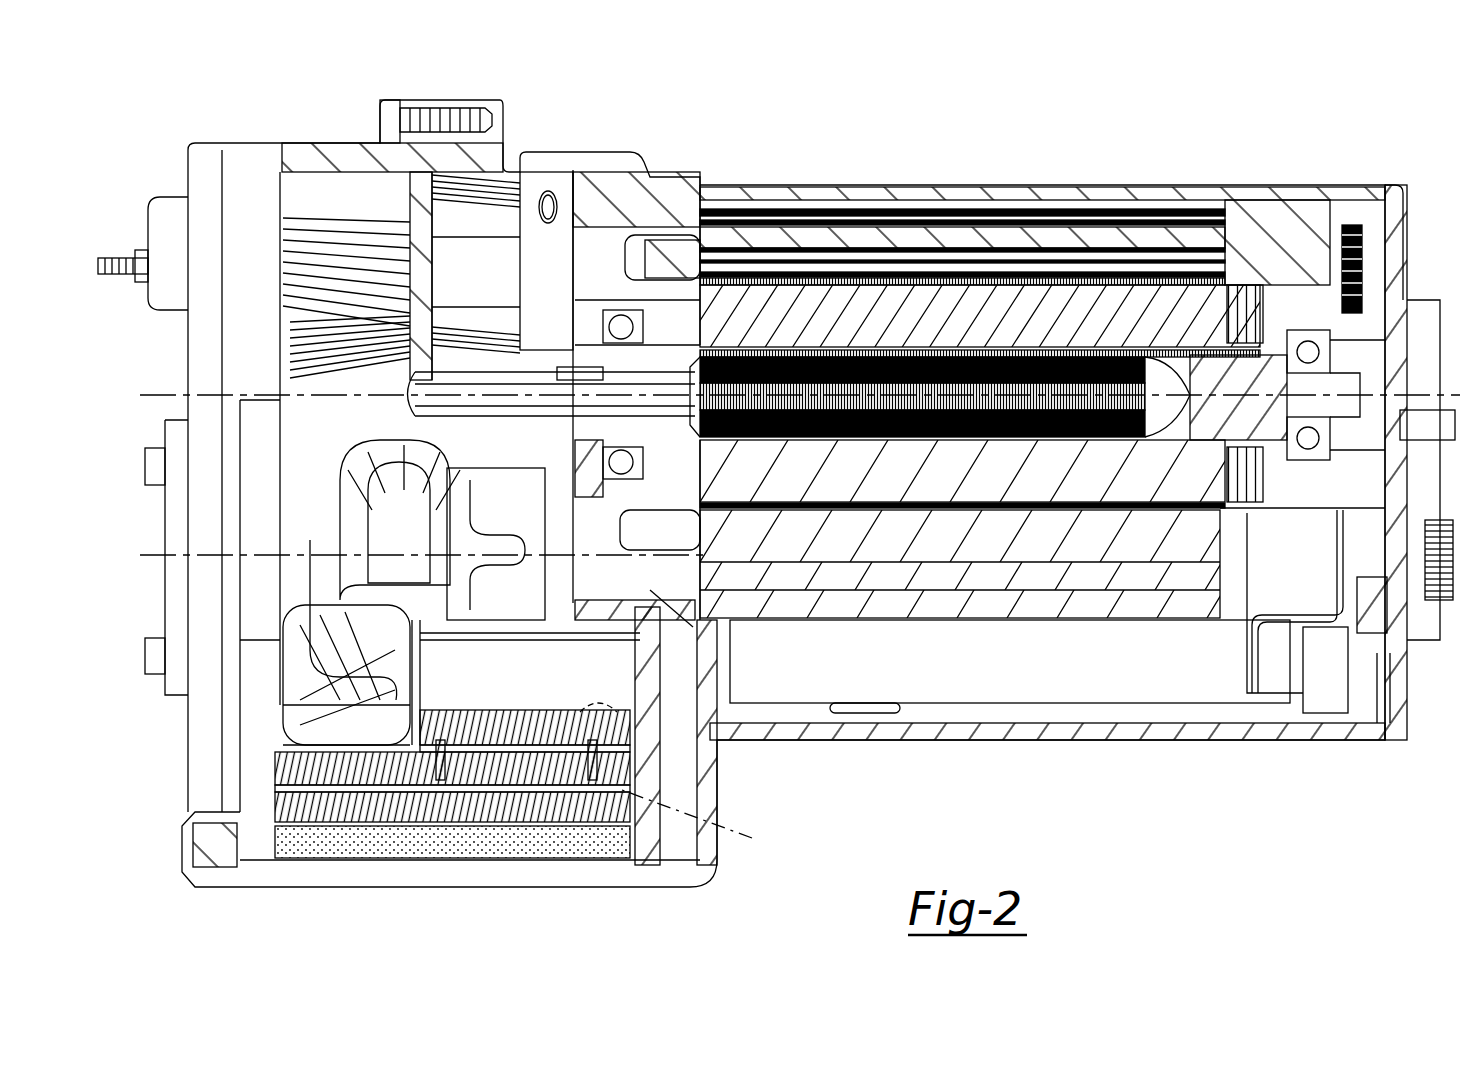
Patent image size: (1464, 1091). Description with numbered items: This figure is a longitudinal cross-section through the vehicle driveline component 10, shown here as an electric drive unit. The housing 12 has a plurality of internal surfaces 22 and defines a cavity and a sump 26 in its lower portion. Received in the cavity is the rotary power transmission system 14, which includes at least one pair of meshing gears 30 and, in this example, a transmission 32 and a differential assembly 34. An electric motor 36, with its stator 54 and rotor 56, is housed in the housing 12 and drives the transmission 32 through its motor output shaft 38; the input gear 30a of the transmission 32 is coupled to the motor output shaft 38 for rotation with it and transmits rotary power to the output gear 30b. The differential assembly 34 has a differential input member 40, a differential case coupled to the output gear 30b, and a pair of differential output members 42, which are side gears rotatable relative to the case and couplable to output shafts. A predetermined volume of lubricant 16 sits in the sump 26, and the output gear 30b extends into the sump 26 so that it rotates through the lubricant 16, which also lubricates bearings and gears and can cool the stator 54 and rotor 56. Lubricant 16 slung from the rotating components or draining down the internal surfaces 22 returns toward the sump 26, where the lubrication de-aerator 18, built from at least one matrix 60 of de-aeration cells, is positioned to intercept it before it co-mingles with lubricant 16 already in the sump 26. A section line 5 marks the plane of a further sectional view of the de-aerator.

The vehicle driveline component 10 is at (1192, 98).
The housing 12 is at (593, 173).
The rotary power transmission system 14 is at (355, 188).
The lubricant 16 is at (515, 842).
The lubrication de-aerator 18 is at (367, 775).
The internal surfaces 22 is at (290, 180).
The sump 26 is at (617, 850).
The meshing gears 30 is at (485, 363).
The input gear 30a is at (527, 370).
The output gear 30b is at (330, 700).
The transmission 32 is at (323, 382).
The differential assembly 34 is at (412, 195).
The electric motor 36 is at (988, 230).
The motor output shaft 38 is at (618, 362).
The differential input member 40 is at (353, 588).
The differential output members 42 is at (353, 530).
The stator 54 is at (838, 237).
The rotor 56 is at (1117, 310).
The matrix 60 is at (527, 718).
The section line 5 is at (680, 780).